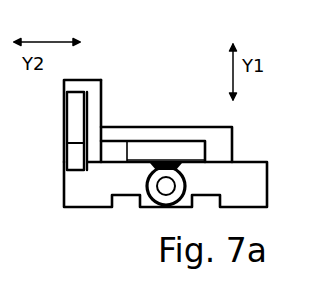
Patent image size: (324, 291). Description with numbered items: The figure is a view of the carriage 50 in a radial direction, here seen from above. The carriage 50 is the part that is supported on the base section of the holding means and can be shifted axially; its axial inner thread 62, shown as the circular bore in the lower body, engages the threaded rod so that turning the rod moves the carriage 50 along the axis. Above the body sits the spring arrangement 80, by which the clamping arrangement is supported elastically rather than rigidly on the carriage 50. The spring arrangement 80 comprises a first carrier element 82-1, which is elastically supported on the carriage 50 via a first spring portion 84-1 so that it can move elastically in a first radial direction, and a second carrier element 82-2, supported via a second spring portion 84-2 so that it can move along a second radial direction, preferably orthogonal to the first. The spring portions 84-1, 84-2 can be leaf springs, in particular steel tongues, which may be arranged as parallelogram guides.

The carriage 50 is at (68, 200).
The axial inner thread 62 is at (151, 187).
The spring arrangement 80 is at (81, 121).
The first carrier element 82-1 is at (193, 136).
The second carrier element 82-2 is at (95, 92).
The first spring portion 84-1 is at (184, 150).
The second spring portion 84-2 is at (63, 141).